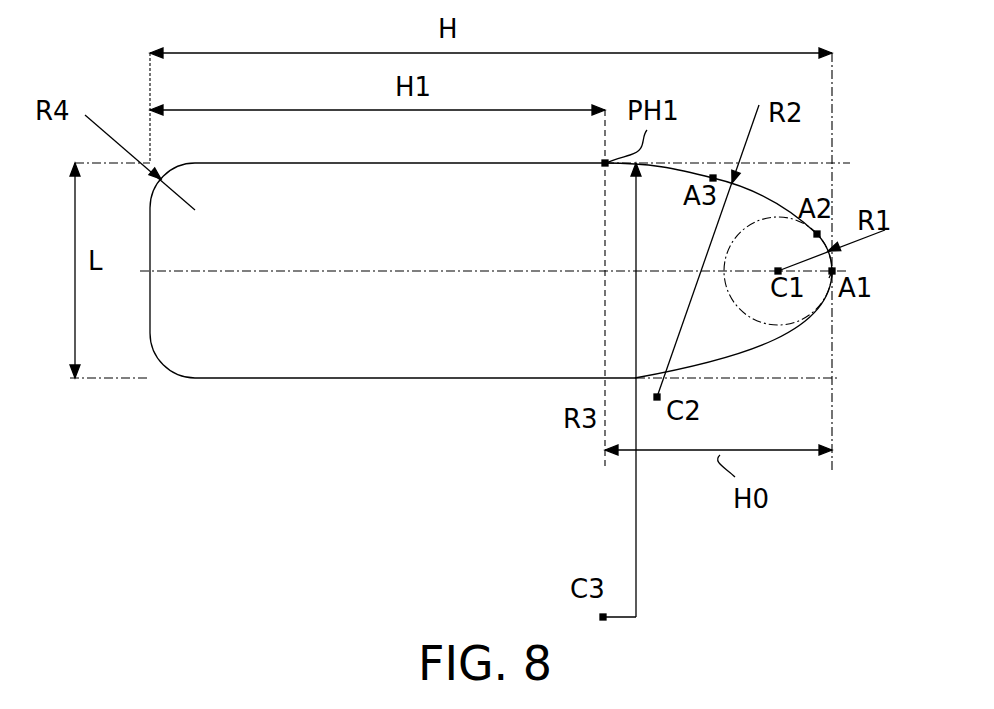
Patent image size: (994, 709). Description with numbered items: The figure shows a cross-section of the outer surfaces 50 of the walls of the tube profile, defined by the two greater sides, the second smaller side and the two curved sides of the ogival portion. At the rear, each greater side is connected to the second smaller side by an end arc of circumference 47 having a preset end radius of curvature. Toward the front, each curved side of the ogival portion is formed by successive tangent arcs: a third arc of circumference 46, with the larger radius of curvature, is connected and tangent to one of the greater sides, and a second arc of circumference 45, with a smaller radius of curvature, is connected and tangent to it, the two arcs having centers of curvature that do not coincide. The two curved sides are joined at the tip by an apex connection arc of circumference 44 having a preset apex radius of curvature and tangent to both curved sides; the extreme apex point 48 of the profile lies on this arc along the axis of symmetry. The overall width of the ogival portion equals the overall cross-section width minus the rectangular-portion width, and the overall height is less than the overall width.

The apex connection arc of circumference 44 is at (824, 240).
The second arc of circumference 45 is at (760, 196).
The third arc of circumference 46 is at (667, 168).
The end arc of circumference 47 is at (170, 168).
The apex point 48 is at (836, 270).
The outer surfaces 50 is at (405, 378).